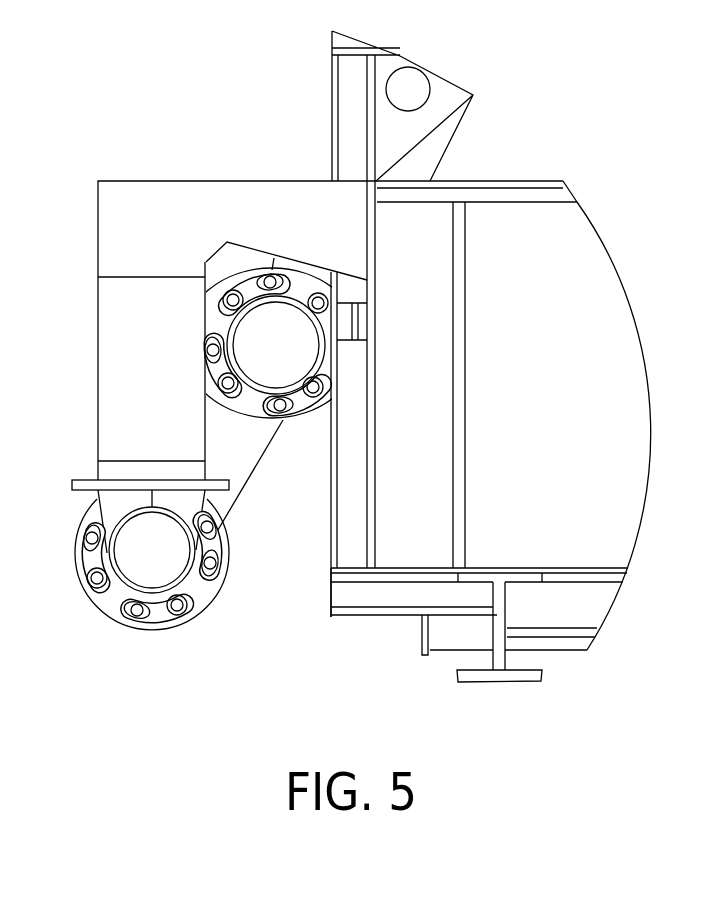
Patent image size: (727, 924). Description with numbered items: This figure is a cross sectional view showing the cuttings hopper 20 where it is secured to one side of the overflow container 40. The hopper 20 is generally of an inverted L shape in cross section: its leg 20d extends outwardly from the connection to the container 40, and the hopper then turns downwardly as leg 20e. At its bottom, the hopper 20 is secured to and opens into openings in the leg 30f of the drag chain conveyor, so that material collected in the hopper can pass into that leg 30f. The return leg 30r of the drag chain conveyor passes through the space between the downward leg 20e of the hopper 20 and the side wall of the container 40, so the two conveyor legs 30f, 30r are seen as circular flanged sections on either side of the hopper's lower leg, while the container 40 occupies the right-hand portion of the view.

The cuttings hopper 20 is at (97, 287).
The leg of the hopper 20d is at (333, 273).
The leg of the hopper 20e is at (203, 448).
The return leg of drag chain conveyor 30r is at (298, 418).
The leg of drag chain conveyor 30f is at (113, 618).
The overflow container 40 is at (601, 414).